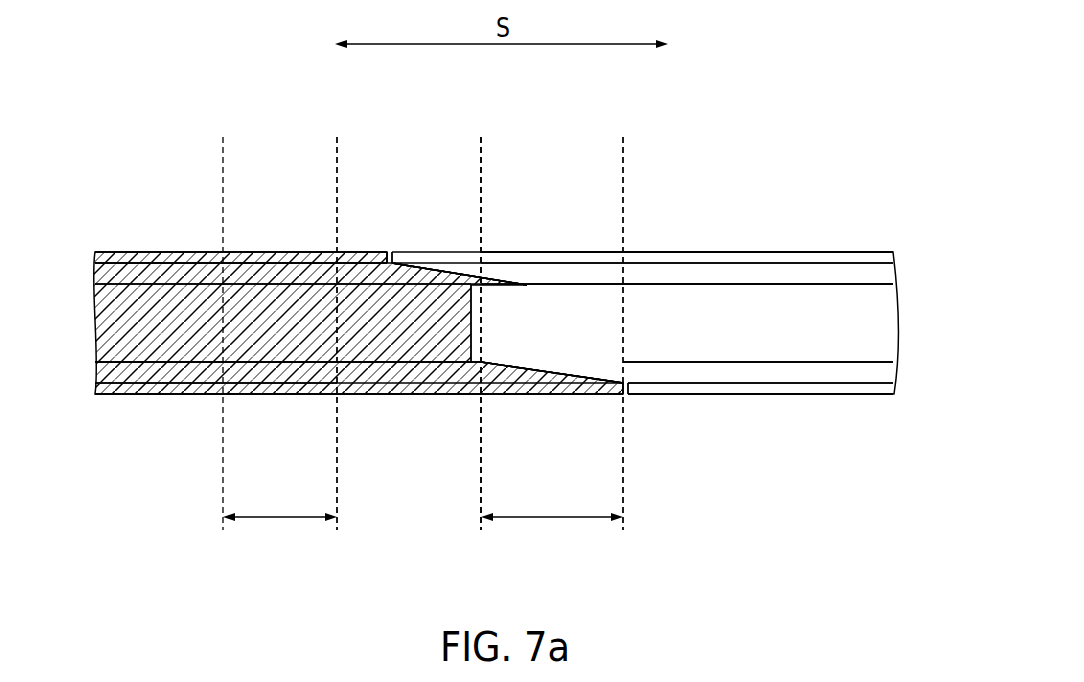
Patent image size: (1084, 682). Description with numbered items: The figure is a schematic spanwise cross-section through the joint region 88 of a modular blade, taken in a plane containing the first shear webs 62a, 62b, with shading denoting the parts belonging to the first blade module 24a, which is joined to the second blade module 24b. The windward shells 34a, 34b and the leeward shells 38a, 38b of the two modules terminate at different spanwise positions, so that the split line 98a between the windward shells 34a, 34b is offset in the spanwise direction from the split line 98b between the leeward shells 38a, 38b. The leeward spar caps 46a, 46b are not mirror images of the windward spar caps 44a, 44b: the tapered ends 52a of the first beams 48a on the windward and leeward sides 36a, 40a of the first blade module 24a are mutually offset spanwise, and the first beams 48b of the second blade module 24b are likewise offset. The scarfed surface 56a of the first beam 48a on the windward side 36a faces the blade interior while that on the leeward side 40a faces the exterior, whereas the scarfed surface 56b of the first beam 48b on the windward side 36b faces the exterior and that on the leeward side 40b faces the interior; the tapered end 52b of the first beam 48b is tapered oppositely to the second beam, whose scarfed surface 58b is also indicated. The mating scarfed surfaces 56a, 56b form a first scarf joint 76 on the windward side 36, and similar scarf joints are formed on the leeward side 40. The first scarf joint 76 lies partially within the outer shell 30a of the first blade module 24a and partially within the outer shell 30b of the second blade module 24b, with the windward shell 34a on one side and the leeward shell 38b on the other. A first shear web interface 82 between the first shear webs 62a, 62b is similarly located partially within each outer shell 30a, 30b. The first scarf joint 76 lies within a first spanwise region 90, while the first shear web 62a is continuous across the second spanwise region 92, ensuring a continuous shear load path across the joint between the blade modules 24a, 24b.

The first blade module 24a is at (157, 157).
The second blade module 24b is at (894, 187).
The outer shell of the first blade module 30a is at (327, 254).
The outer shell of the second blade module 30b is at (717, 260).
The windward shell of the first blade module 34a is at (260, 408).
The windward shell of the second blade module 34b is at (844, 408).
The windward side 36 is at (460, 458).
The windward side of the first blade module 36a is at (167, 408).
The windward side of the second blade module 36b is at (757, 408).
The leeward shell of the first blade module 38a is at (260, 239).
The leeward shell of the second blade module 38b is at (665, 239).
The leeward side 40 is at (586, 137).
The leeward side of the first blade module 40a is at (194, 239).
The leeward side of the second blade module 40b is at (775, 239).
The windward spar cap 44a is at (120, 377).
The windward spar cap 44b is at (788, 372).
The leeward spar cap 46a is at (122, 270).
The leeward spar cap 46b is at (822, 272).
The first beam 48a is at (382, 253).
The first beam 48b is at (562, 278).
The tapered end of the first beam 52a is at (409, 281).
The tapered end of the first beam 52b is at (624, 363).
The scarfed surface of the first beam 56a is at (393, 368).
The scarfed surface of the first beam 56b is at (507, 272).
The scarfed surface of the second beam 58b is at (590, 378).
The first shear web 62a is at (112, 318).
The first shear web 62b is at (875, 335).
The first scarf joint 76 is at (470, 282).
The first shear web interface 82 is at (464, 350).
The joint region 88 is at (457, 135).
The first spanwise region 90 is at (552, 519).
The second spanwise region 92 is at (278, 519).
The split line 98a is at (634, 408).
The split line 98b is at (396, 231).